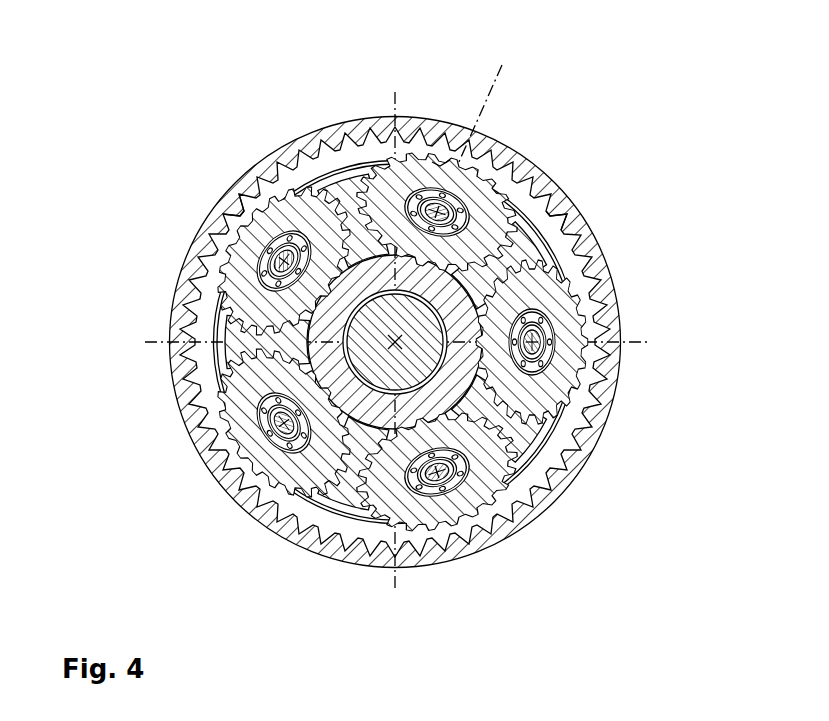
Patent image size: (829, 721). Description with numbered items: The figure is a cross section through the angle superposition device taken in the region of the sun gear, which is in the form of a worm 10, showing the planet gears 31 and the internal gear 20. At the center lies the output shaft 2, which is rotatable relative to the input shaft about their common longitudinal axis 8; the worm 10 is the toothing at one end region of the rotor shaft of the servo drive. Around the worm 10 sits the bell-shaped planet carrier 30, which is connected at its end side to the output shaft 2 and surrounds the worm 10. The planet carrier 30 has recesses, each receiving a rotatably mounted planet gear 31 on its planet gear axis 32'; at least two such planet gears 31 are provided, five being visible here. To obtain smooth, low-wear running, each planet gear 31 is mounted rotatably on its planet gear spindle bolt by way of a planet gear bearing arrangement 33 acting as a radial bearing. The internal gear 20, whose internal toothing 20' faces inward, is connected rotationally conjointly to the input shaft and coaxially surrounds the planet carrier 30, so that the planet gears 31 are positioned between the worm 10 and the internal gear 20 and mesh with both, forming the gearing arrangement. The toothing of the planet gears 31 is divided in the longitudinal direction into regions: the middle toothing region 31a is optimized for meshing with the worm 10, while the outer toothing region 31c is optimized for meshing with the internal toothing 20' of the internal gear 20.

The output shaft 2 is at (372, 357).
The longitudinal axis 8 is at (233, 250).
The worm 10 is at (228, 307).
The internal gear 20 is at (413, 342).
The internal toothing 20' is at (634, 214).
The planet carrier 30 is at (566, 431).
The planet gear 31 is at (262, 239).
The middle toothing region 31a is at (520, 265).
The outer toothing region 31c is at (440, 166).
The planet gear axis 32' is at (419, 346).
The planet gear bearing arrangement 33 is at (300, 236).